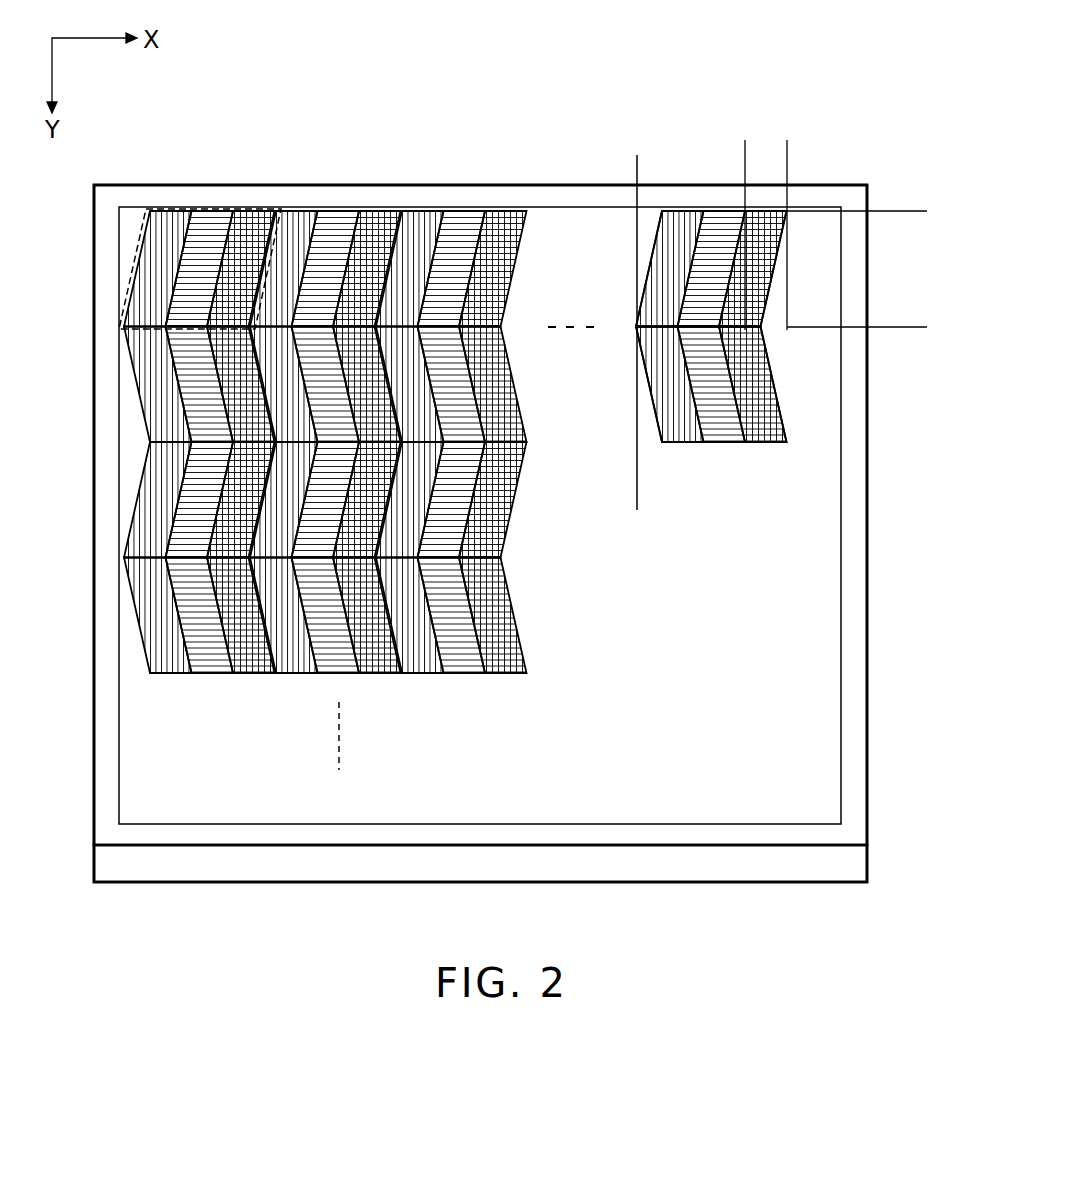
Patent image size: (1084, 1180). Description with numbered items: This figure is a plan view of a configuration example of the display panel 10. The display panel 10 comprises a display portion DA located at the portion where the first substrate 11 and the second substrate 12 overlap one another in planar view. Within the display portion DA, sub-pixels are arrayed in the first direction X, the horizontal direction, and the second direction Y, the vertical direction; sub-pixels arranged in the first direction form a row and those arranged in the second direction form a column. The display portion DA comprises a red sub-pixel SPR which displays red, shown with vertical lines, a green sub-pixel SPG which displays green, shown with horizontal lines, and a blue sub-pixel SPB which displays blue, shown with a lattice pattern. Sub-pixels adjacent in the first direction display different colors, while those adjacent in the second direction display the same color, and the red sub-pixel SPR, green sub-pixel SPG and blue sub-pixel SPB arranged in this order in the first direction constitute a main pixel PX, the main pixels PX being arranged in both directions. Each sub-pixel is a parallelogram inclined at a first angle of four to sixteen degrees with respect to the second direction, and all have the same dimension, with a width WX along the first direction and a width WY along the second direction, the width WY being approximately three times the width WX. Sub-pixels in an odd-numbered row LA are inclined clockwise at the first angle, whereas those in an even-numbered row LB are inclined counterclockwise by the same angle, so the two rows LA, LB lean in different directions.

The display panel 10 is at (843, 888).
The first substrate 11 is at (855, 867).
The second substrate 12 is at (855, 835).
The display portion DA is at (845, 675).
The main pixel PX is at (142, 244).
The red sub-pixel SPR is at (173, 220).
The green sub-pixel SPG is at (212, 220).
The blue sub-pixel SPB is at (258, 218).
The odd-numbered row LA is at (822, 253).
The even-numbered row LB is at (828, 387).
The width along the first direction WX is at (782, 147).
The width along the second direction WY is at (918, 216).